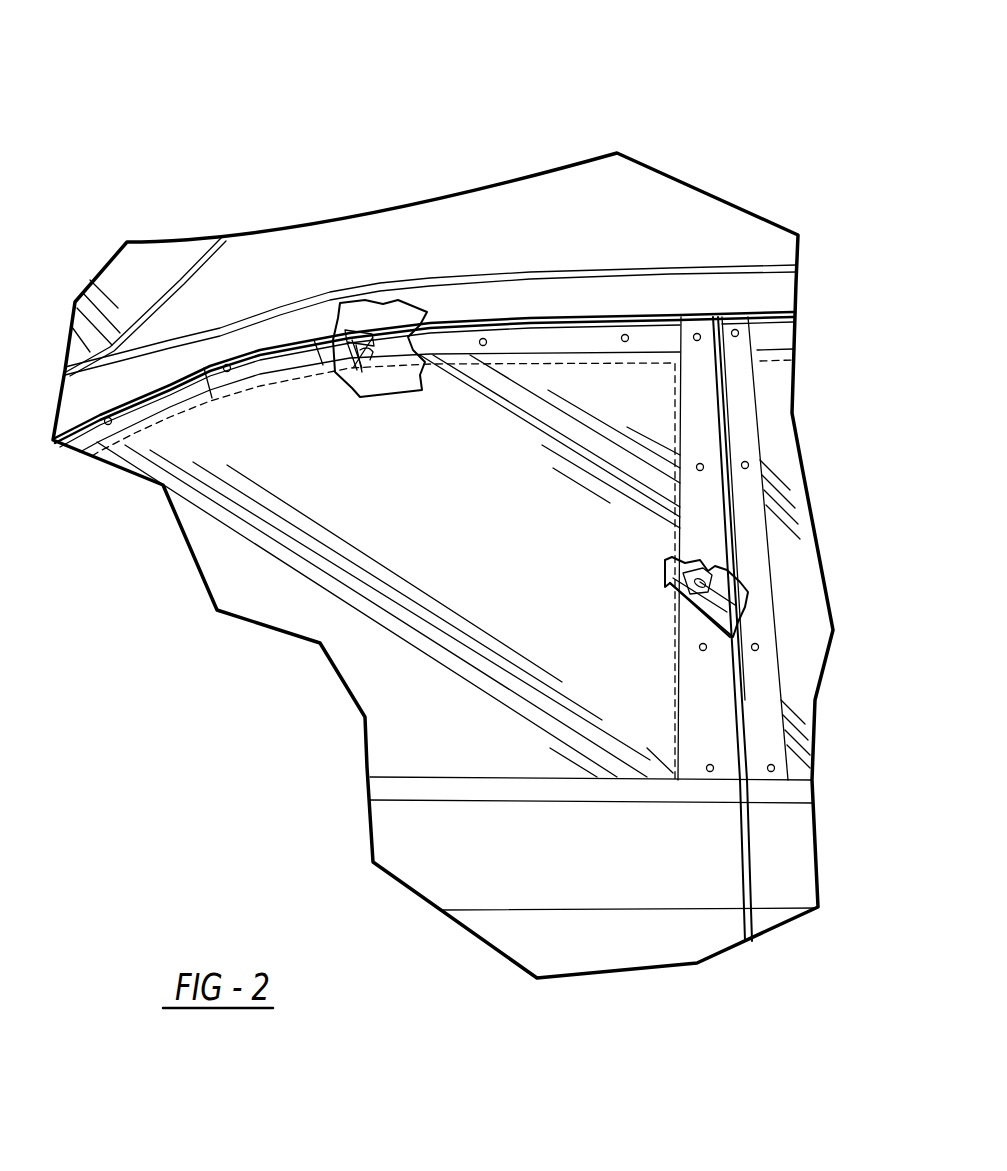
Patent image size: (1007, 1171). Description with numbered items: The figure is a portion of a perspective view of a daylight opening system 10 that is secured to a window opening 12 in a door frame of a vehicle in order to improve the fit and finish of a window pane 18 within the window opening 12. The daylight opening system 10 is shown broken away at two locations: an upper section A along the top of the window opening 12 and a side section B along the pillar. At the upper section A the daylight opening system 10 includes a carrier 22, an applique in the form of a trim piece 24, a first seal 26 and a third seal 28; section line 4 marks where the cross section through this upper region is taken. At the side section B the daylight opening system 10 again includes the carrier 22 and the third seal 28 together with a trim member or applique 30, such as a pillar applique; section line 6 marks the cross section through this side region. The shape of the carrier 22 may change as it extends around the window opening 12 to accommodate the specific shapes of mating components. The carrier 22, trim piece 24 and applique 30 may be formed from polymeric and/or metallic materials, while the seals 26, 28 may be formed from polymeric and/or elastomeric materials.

The daylight opening system 10 is at (734, 115).
The window opening 12 is at (667, 313).
The window pane 18 is at (407, 683).
The carrier 22 is at (364, 352).
The trim piece 24 is at (274, 360).
The first seal 26 is at (352, 338).
The third seal 28 is at (358, 345).
The applique 30 is at (697, 753).
The section line 4- 4 is at (236, 321).
The section line 6- 6 is at (645, 668).
The upper section A is at (400, 300).
The side section B is at (712, 562).